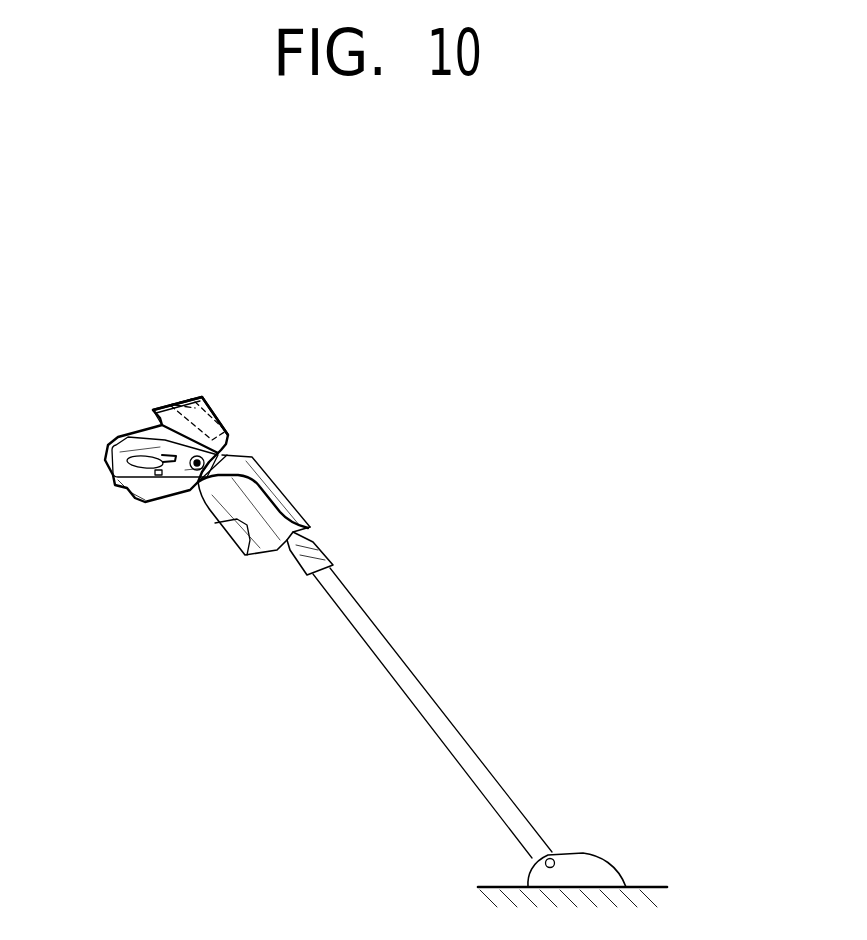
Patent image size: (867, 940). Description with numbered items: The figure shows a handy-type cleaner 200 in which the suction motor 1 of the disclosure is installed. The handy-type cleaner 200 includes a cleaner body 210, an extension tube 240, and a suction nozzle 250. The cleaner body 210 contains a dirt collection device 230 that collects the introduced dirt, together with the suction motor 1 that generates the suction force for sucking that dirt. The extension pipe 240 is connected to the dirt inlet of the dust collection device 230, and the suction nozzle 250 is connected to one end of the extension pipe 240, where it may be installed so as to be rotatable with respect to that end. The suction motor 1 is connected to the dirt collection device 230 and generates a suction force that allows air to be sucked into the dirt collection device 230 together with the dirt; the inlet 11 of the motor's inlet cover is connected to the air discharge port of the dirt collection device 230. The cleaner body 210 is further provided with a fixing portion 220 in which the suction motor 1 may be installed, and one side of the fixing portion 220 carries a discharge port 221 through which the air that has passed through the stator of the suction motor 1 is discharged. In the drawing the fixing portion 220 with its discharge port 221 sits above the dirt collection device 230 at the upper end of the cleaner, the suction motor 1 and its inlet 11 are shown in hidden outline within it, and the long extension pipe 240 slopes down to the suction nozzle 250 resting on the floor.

The suction motor 1 is at (170, 402).
The inlet 11 is at (228, 428).
The handy-type cleaner 200 is at (293, 377).
The cleaner body 210 is at (258, 437).
The fixing portion 220 is at (205, 396).
The discharge port 221 is at (183, 398).
The dirt collection device 230 is at (262, 501).
The extension pipe 240 is at (495, 793).
The suction nozzle 250 is at (587, 858).